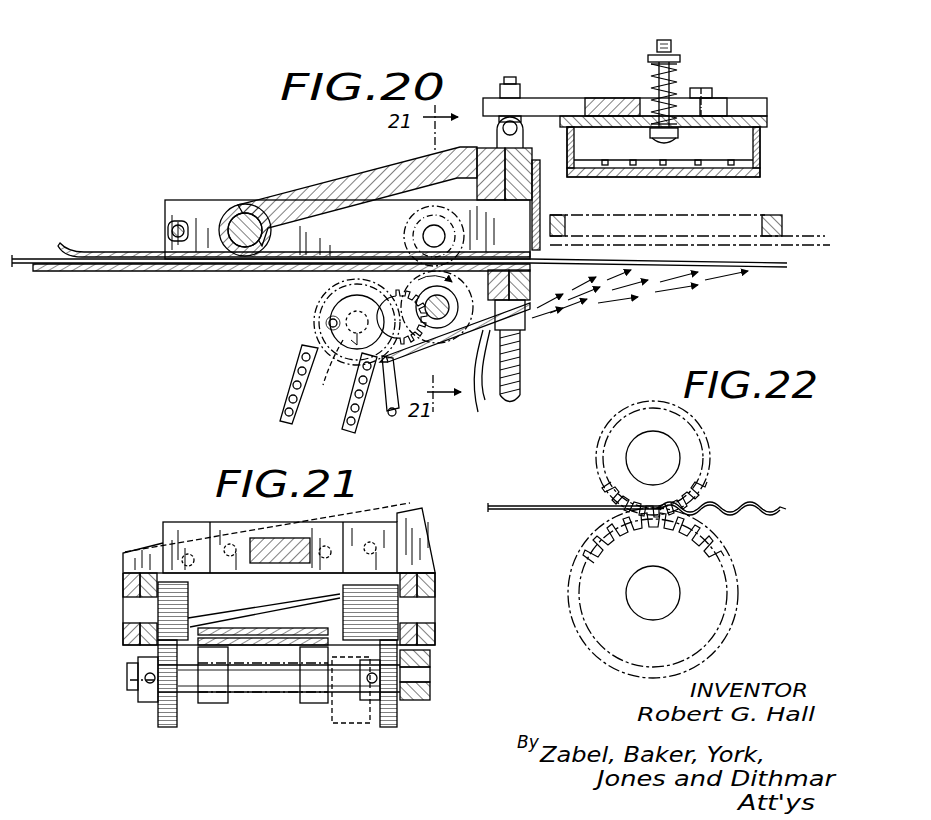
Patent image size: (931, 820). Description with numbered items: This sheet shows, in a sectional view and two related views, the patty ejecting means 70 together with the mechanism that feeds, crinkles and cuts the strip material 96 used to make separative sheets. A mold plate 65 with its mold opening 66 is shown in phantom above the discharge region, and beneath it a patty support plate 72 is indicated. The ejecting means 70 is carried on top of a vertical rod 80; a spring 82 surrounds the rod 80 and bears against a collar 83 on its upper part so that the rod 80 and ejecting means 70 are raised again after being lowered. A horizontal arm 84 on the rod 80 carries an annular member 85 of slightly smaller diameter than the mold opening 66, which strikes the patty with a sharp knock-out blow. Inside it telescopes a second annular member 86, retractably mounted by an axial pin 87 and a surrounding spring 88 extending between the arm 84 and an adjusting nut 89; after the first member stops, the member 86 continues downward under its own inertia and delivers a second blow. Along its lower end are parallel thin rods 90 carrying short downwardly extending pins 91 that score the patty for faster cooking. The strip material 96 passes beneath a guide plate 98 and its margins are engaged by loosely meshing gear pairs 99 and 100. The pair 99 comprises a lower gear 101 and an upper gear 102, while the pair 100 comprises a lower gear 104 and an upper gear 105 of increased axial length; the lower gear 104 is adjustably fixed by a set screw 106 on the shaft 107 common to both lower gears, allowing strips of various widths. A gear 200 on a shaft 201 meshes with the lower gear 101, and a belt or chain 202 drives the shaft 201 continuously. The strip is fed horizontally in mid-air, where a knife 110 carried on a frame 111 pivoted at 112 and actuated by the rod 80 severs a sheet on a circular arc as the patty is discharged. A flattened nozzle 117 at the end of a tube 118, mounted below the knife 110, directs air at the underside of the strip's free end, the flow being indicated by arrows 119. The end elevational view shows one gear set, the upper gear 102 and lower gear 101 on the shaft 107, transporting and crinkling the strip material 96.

In FIG. 20, the mold plate 65 is at (783, 215).
In FIG. 20, the mold opening 66 is at (752, 228).
In FIG. 20, the ejecting means 70 is at (765, 90).
In FIG. 20, the patty support plate 72 is at (793, 268).
In FIG. 20, the vertical rod 80 is at (521, 382).
In FIG. 20, the spring 82 is at (523, 352).
In FIG. 20, the collar 83 is at (530, 330).
In FIG. 20, the horizontal arm 84 is at (553, 98).
In FIG. 20, the annular member 85 is at (758, 172).
In FIG. 20, the second annular member 86 is at (742, 148).
In FIG. 20, the axial pin 87 is at (680, 84).
In FIG. 20, the spring 88 is at (650, 80).
In FIG. 20, the adjusting nut 89 is at (672, 56).
In FIG. 20, the rods 90 is at (648, 168).
In FIG. 20, the pins 91 is at (722, 170).
In FIG. 20, the strip material 96 is at (28, 258).
In FIG. 22, the strip material 96 is at (558, 506).
In FIG. 20, the guide plate 98 is at (103, 248).
In FIG. 21, the guide plate 98 is at (276, 630).
In FIG. 20, the pair of gears 99 is at (472, 254).
In FIG. 21, the pair of gears 99 is at (150, 712).
In FIG. 21, the pair of gears 100 is at (398, 712).
In FIG. 20, the lower gear 101 is at (345, 328).
In FIG. 21, the lower gear 101 is at (168, 727).
In FIG. 22, the lower gear 101 is at (738, 580).
In FIG. 20, the upper gear 102 is at (412, 224).
In FIG. 21, the upper gear 102 is at (193, 594).
In FIG. 22, the upper gear 102 is at (700, 447).
In FIG. 21, the lower gear 104 is at (372, 728).
In FIG. 21, the upper gear 105 is at (343, 592).
In FIG. 21, the set screw 106 is at (352, 690).
In FIG. 20, the shaft 107 is at (436, 300).
In FIG. 21, the shaft 107 is at (262, 700).
In FIG. 22, the shaft 107 is at (648, 600).
In FIG. 20, the knife 110 is at (540, 197).
In FIG. 21, the knife 110 is at (397, 510).
In FIG. 20, the frame 111 is at (378, 172).
In FIG. 21, the frame 111 is at (275, 545).
In FIG. 20, the pivot 112 is at (245, 212).
In FIG. 20, the flattened nozzle 117 is at (472, 395).
In FIG. 20, the tube 118 is at (378, 400).
In FIG. 20, the arrows 119 is at (680, 288).
In FIG. 20, the gear 200 is at (325, 292).
In FIG. 20, the shaft 201 is at (324, 376).
In FIG. 20, the chain 202 is at (293, 375).